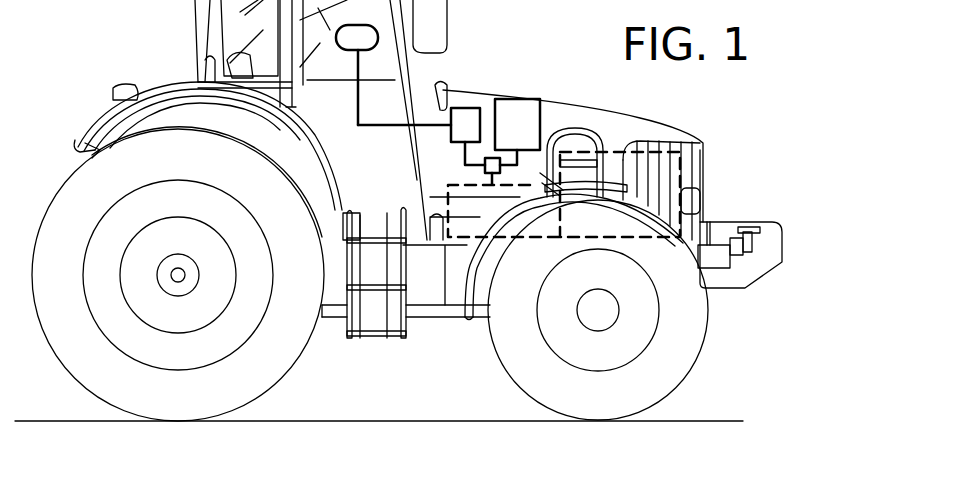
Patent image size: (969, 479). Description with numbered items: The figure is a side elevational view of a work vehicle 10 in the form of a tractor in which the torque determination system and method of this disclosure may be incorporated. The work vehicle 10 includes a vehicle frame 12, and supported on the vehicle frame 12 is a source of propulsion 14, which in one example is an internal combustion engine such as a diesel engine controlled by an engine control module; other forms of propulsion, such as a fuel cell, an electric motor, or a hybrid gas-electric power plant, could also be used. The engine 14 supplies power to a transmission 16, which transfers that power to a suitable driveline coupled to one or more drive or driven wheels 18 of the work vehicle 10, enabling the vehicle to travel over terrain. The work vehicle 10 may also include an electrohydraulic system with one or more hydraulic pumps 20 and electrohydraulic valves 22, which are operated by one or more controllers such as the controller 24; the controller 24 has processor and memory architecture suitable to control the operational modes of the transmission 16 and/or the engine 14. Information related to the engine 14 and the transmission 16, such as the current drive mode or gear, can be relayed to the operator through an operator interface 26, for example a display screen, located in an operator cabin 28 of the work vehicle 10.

The work vehicle 10 is at (449, 160).
The vehicle frame 12 is at (440, 291).
The source of propulsion 14 is at (683, 178).
The transmission 16 is at (465, 255).
The drive/driven wheels 18 is at (175, 270).
The hydraulic pump 20 is at (518, 110).
The electrohydraulic valve 22 is at (485, 168).
The controller 24 is at (462, 110).
The operator interface 26 is at (360, 32).
The operator cabin 28 is at (203, 28).